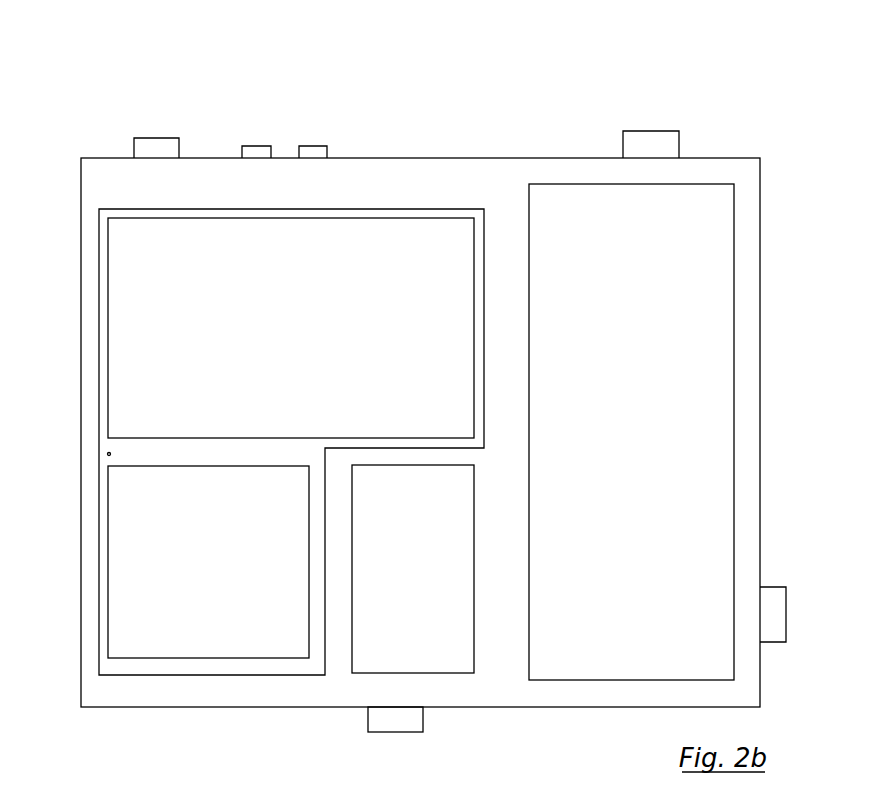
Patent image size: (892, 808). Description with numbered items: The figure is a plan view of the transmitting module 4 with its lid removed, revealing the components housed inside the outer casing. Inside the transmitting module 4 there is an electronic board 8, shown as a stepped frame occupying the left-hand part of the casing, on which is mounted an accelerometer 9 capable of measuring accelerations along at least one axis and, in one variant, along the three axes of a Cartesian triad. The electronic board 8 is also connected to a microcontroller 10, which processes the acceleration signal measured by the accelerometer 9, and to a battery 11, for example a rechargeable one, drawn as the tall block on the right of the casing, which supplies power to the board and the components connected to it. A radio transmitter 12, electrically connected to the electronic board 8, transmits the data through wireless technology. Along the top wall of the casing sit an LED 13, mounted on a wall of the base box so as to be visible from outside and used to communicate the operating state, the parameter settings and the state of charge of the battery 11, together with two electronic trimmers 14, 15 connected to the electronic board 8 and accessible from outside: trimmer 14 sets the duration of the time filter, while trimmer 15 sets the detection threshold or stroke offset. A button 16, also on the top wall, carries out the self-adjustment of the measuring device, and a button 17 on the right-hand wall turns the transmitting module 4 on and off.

The transmitting module 4 is at (542, 132).
The electronic board 8 is at (97, 453).
The accelerometer 9 is at (148, 633).
The microcontroller 10 is at (362, 247).
The battery 11 is at (705, 362).
The radio transmitter 12 is at (447, 657).
The LED 13 is at (152, 142).
The trimmer 14 is at (252, 147).
The trimmer 15 is at (315, 147).
The button 16 is at (667, 135).
The button 17 is at (780, 598).